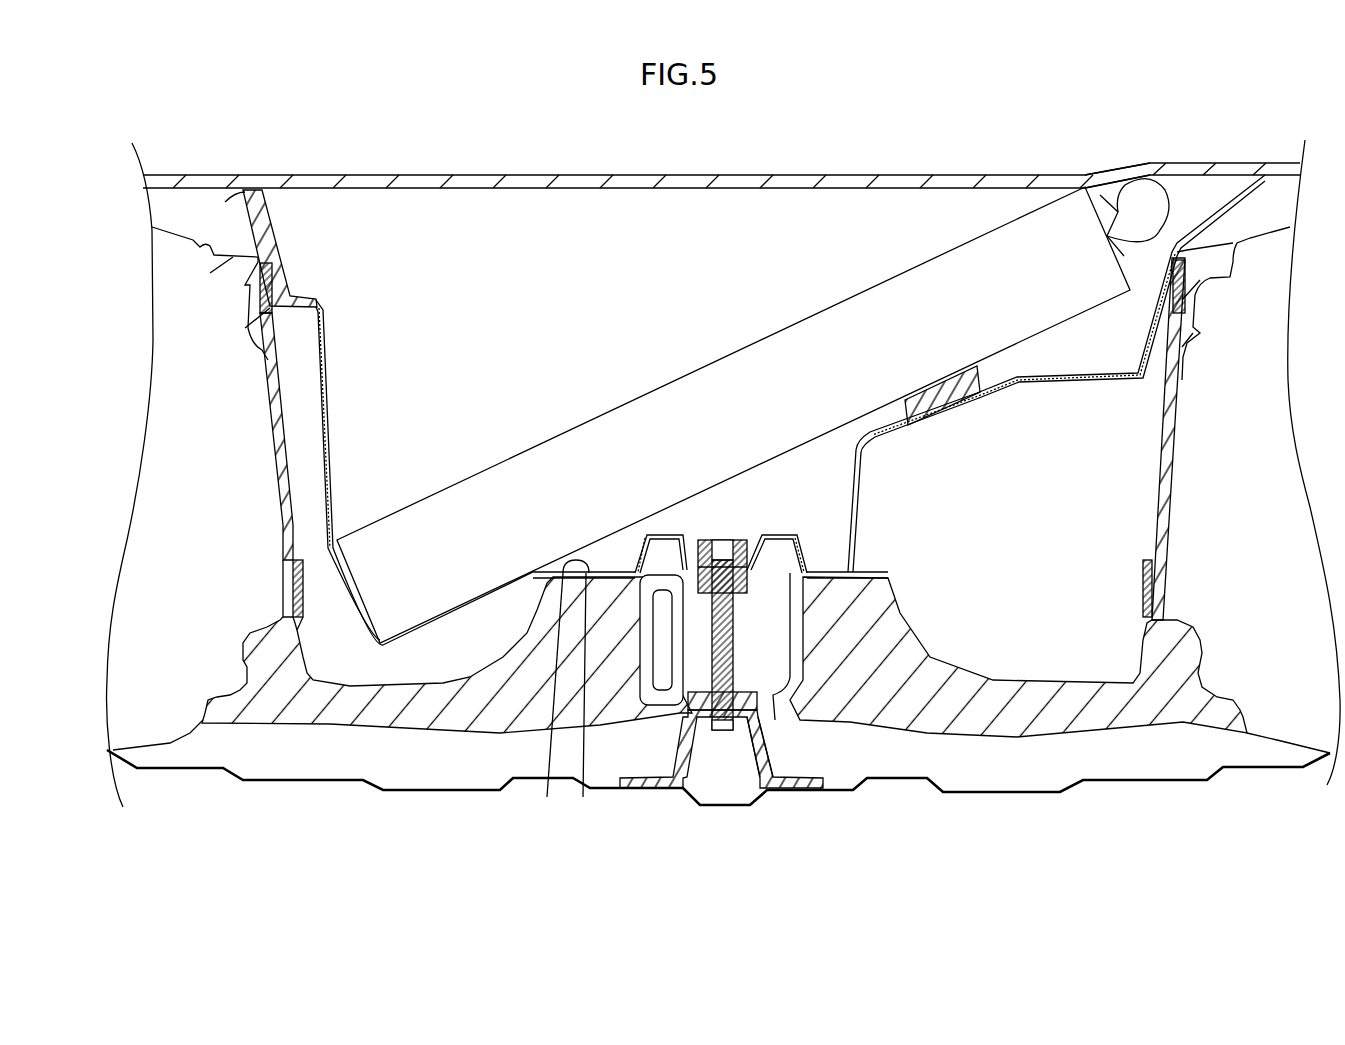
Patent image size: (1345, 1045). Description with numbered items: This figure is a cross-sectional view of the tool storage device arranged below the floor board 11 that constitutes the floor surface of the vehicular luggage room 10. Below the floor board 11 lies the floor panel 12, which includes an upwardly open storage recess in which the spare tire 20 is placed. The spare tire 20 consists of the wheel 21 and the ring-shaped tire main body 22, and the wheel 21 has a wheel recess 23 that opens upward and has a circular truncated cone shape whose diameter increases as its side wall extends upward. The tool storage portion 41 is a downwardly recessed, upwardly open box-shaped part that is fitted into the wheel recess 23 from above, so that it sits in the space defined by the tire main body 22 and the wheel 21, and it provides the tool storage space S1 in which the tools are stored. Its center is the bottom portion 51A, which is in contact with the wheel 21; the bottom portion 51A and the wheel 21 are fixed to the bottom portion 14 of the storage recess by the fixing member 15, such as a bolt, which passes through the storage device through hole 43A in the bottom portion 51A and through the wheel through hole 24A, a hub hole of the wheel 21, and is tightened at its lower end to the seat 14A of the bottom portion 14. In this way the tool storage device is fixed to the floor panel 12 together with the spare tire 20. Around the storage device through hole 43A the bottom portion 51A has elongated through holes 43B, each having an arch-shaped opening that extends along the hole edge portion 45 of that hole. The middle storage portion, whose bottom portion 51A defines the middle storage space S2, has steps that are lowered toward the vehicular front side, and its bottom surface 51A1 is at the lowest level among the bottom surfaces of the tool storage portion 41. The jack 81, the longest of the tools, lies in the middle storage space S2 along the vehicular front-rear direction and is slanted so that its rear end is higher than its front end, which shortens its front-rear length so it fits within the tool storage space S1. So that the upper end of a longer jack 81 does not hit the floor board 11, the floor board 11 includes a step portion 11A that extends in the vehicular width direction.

The vehicular luggage room 10 is at (170, 157).
The floor board 11 is at (228, 185).
The step portion 11A is at (1140, 170).
The floor panel 12 is at (413, 792).
The bottom portion 14 is at (840, 790).
The seat 14A is at (757, 755).
The fixing member 15 is at (745, 617).
The spare tire 20 is at (162, 752).
The wheel 21 is at (330, 710).
The tire main body 22 is at (180, 722).
The wheel recess 23 is at (272, 360).
The wheel through hole 24A is at (772, 740).
The tool storage portion 41 is at (318, 387).
The storage device through hole 43A is at (657, 577).
The elongated through holes 43B is at (622, 570).
The hole edge portion 45 is at (613, 575).
The bottom portion 51A is at (583, 797).
The bottom surface 51A1 is at (547, 797).
The jack 81 is at (857, 318).
The tool storage space S1 is at (328, 358).
The middle storage space S2 is at (888, 425).